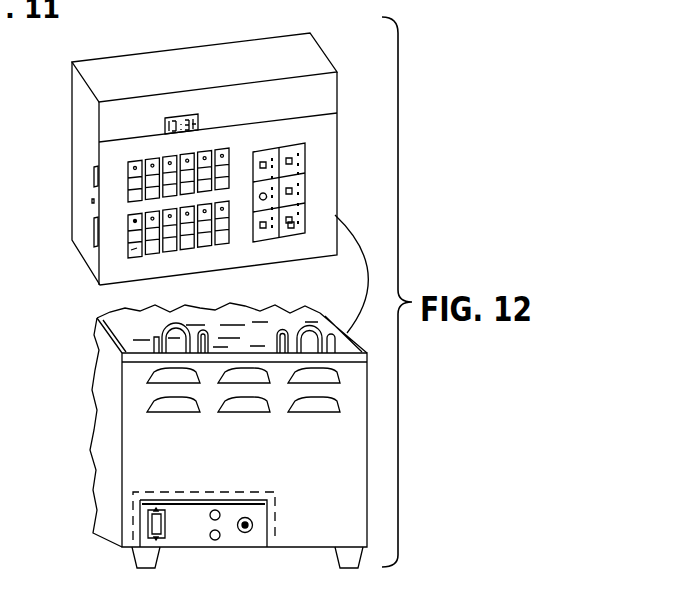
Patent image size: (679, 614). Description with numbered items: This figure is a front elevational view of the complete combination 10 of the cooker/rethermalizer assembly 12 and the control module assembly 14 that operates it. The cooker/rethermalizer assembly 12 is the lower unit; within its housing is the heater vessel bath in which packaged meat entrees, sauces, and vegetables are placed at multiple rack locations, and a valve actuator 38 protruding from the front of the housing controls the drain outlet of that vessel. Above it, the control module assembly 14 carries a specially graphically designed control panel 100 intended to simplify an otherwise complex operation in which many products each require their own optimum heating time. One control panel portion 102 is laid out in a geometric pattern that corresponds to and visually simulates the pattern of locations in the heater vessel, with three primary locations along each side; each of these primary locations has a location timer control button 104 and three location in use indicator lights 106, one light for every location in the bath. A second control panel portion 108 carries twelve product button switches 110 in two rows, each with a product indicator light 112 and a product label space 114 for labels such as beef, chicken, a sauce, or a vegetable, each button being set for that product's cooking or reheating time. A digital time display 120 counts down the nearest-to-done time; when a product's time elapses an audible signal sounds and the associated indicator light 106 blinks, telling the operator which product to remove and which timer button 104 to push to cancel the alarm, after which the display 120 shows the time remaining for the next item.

The complete combination 10 is at (198, 166).
The cooker/rethermalizer assembly 12 is at (77, 337).
The control module assembly 14 is at (253, 35).
The valve actuator 38 is at (245, 533).
The control panel 100 is at (325, 143).
The control panel portion 102 is at (300, 233).
The location timer control button 104 is at (290, 228).
The location in use indicator light 106 is at (300, 198).
The second control panel portion 108 is at (118, 170).
The product button switch 110 is at (133, 192).
The product indicator light 112 is at (133, 225).
The product label space 114 is at (133, 237).
The digital time display 120 is at (192, 117).